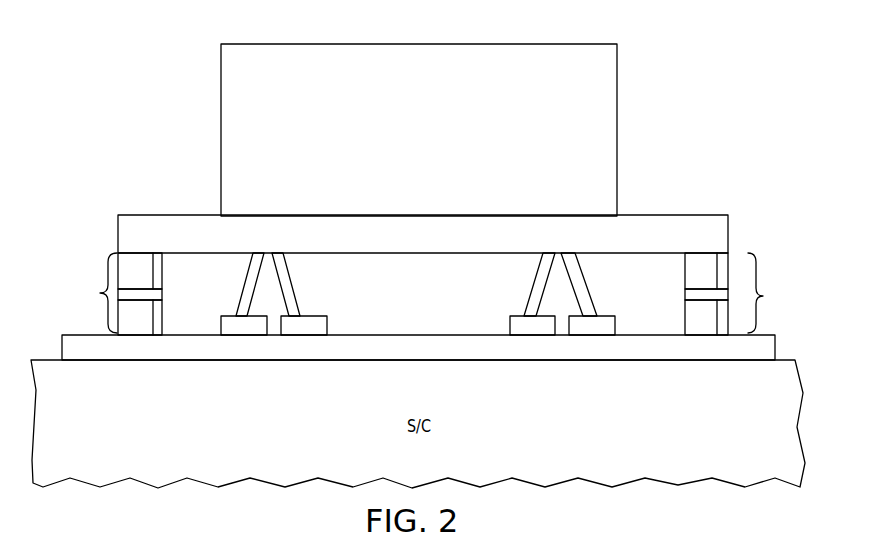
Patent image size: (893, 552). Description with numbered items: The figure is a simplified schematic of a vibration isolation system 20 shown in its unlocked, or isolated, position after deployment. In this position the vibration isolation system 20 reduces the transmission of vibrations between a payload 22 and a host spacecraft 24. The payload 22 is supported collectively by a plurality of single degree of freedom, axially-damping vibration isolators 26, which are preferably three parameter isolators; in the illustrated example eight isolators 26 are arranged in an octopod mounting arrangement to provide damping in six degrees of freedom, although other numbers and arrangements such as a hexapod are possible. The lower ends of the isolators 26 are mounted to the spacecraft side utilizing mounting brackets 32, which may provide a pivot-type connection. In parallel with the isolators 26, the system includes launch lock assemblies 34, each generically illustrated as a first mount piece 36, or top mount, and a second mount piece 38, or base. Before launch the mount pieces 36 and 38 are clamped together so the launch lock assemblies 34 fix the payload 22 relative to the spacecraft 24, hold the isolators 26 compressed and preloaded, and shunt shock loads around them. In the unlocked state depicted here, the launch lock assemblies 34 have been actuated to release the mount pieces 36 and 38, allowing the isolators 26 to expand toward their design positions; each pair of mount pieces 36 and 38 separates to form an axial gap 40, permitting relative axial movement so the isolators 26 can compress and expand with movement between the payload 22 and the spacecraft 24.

The vibration isolation system 20 is at (115, 79).
The payload 22 is at (230, 93).
The host spacecraft 24 is at (48, 365).
The vibration isolators 26 is at (257, 257).
The mounting brackets 32 is at (227, 327).
The launch lock assemblies 34 is at (430, 310).
The first mount piece 36 is at (132, 262).
The second mount piece 38 is at (130, 333).
The axial gap 40 is at (158, 297).